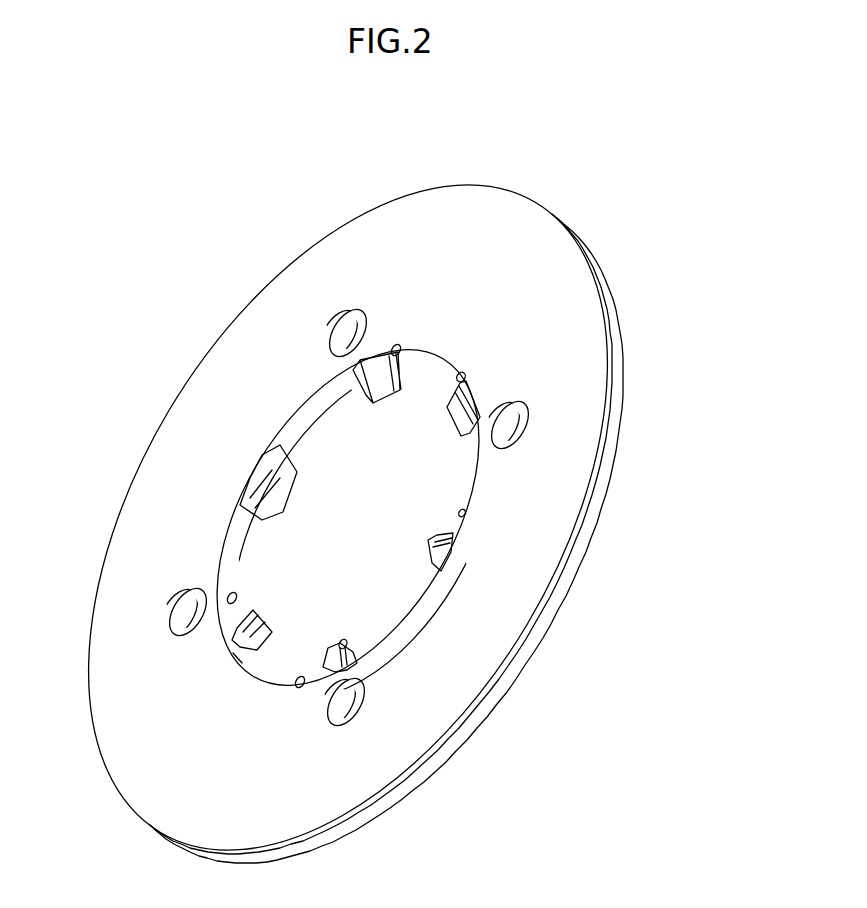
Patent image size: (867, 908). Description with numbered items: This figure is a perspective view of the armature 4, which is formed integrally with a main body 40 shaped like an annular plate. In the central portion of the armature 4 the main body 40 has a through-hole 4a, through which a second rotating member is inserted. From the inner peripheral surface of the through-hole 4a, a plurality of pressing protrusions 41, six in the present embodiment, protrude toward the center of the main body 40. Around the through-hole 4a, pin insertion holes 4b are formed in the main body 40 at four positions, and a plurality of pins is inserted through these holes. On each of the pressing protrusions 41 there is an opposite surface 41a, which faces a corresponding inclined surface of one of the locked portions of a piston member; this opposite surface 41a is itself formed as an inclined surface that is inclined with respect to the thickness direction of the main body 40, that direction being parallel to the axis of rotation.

The armature 4 is at (565, 195).
The through-hole 4a is at (273, 575).
The pin insertion holes 4b is at (335, 316).
The main body 40 is at (237, 345).
The pressing protrusions 41 is at (288, 490).
The opposite surface 41a is at (263, 485).